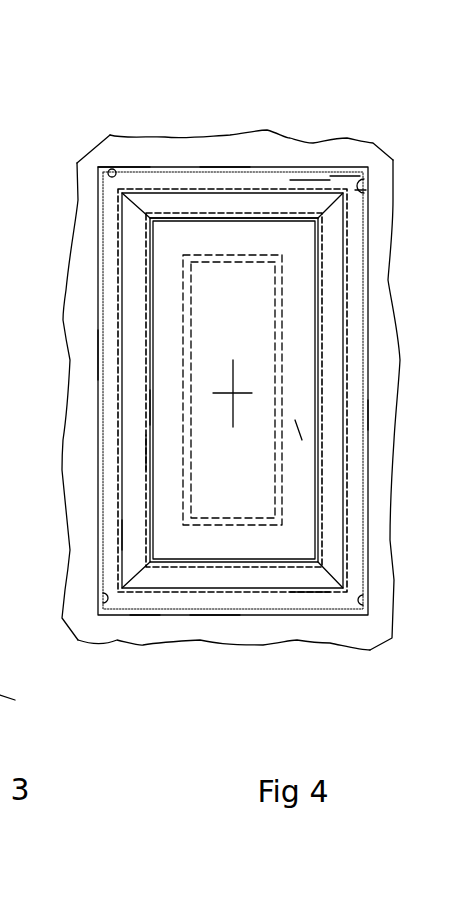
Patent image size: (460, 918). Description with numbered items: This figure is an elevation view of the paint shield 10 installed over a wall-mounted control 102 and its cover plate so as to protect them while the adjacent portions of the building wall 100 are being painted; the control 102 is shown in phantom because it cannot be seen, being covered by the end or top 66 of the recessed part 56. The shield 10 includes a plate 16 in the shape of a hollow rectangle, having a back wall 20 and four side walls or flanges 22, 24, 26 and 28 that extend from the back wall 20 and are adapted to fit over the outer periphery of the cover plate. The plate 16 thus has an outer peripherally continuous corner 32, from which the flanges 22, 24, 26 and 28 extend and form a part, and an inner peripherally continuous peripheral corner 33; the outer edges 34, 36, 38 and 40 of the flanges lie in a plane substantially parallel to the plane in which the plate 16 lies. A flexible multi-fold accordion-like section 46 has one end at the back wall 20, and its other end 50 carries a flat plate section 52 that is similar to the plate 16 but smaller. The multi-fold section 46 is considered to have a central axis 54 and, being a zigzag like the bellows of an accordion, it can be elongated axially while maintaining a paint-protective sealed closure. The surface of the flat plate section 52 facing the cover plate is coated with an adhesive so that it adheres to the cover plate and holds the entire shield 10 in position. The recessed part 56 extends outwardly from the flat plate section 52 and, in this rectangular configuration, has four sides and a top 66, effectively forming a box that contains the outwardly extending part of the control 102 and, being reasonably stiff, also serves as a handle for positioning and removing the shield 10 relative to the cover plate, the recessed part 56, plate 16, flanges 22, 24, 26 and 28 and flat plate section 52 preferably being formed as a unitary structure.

The paint shield 10 is at (122, 158).
The plate 16 is at (197, 172).
The back wall 20 is at (310, 180).
The side wall or flange 22 is at (345, 178).
The side wall or flange 24 is at (368, 415).
The side wall or flange 26 is at (310, 593).
The side wall or flange 28 is at (122, 535).
The outer peripherally continuous corner 32 is at (77, 163).
The inner peripherally continuous peripheral corner 33 is at (109, 169).
The outer edge 34 is at (223, 168).
The outer edge 36 is at (100, 355).
The outer edge 38 is at (213, 617).
The outer edge 40 is at (363, 195).
The flexible multi-fold accordion-like section 46 is at (175, 220).
The other end of the multi-fold section 50 is at (147, 407).
The flat plate section 52 is at (133, 237).
The central axis 54 is at (237, 392).
The recessed part 56 is at (147, 452).
The top 66 is at (298, 428).
The building wall 100 is at (145, 628).
The wall-mounted control 102 is at (210, 316).